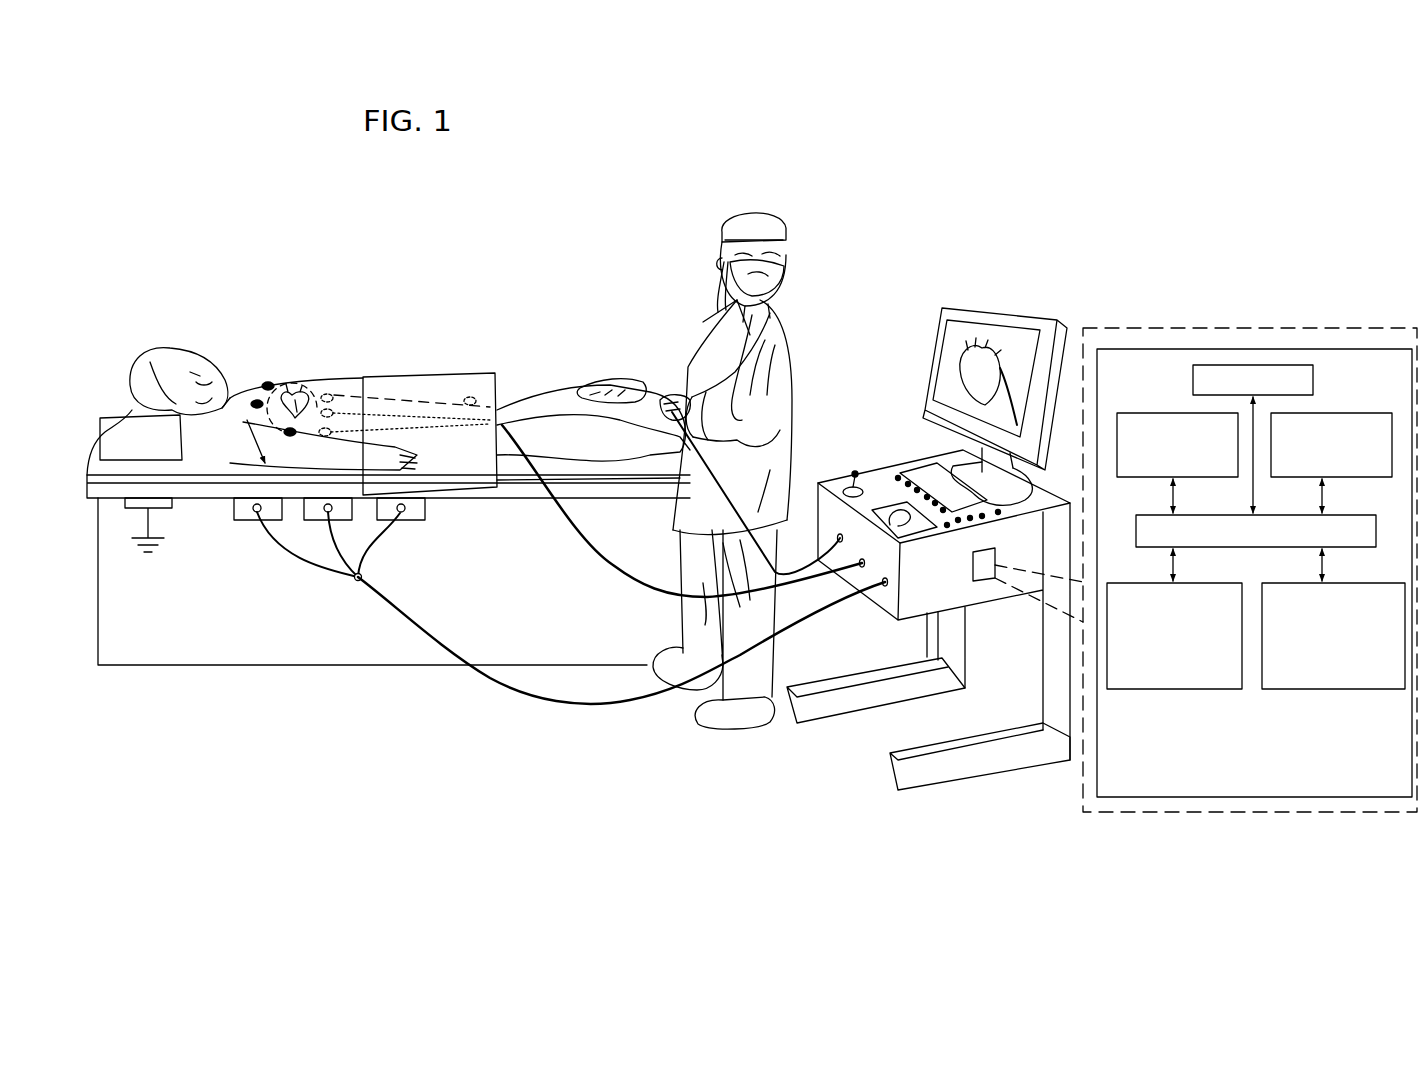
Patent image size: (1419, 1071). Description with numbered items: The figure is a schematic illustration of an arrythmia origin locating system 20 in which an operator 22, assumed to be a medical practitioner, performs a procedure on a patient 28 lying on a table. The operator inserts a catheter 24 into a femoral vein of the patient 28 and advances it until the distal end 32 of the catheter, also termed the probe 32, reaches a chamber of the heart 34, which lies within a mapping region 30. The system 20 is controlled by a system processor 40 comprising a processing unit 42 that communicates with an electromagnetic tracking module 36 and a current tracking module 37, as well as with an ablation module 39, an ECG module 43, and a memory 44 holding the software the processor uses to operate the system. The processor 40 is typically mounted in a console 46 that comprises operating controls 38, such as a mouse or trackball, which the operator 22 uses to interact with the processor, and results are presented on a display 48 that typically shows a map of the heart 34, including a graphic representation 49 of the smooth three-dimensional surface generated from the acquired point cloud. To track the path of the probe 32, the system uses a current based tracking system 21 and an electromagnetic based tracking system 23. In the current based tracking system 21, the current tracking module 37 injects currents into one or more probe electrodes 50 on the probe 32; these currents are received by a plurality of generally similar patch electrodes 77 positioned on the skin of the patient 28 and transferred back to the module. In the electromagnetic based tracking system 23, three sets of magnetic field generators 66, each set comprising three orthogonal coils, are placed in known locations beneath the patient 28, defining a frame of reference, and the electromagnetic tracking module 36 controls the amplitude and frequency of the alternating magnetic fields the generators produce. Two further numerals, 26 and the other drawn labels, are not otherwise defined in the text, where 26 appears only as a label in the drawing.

The arrythmia origin locating system 20 is at (900, 256).
The current based tracking system 21 is at (258, 713).
The operator 22 is at (750, 215).
The electromagnetic based tracking system 23 is at (312, 713).
The catheter 24 is at (568, 390).
The patient 26 is at (413, 285).
The patient 28 is at (570, 448).
The mapping region 30 is at (278, 418).
The distal end 32 is at (285, 230).
The heart 34 is at (300, 405).
The electromagnetic tracking module 36 is at (1178, 692).
The current tracking module 37 is at (1320, 692).
The operating controls 38 is at (842, 372).
The ablation module 39 is at (1158, 412).
The system processor 40 is at (1097, 777).
The processing unit 42 is at (1148, 515).
The ECG module 43 is at (1338, 412).
The memory 44 is at (1246, 364).
The console 46 is at (880, 465).
The display 48 is at (953, 307).
The graphic representation 49 is at (982, 342).
The probe electrodes 50 is at (216, 230).
The generators 66 is at (422, 548).
The patch electrodes 77 is at (328, 428).